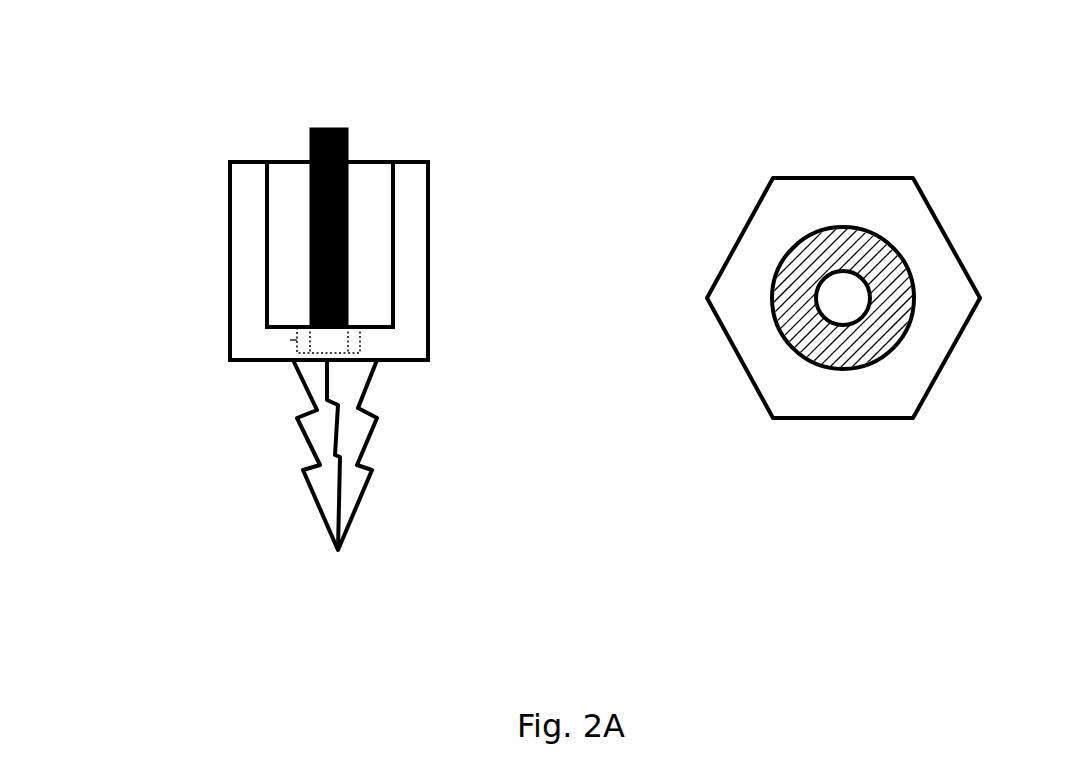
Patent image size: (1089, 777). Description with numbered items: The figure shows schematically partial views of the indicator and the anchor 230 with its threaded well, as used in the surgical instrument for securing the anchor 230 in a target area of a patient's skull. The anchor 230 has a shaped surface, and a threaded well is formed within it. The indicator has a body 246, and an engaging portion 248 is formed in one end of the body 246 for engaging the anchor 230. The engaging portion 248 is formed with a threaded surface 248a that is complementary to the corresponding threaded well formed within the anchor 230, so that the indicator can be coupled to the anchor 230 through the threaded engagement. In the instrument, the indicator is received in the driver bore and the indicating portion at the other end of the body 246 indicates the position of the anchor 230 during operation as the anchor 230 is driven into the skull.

The anchor 230 is at (283, 457).
The body 246 is at (350, 145).
The engaging portion 248 is at (360, 338).
The threaded surface 248a is at (297, 340).